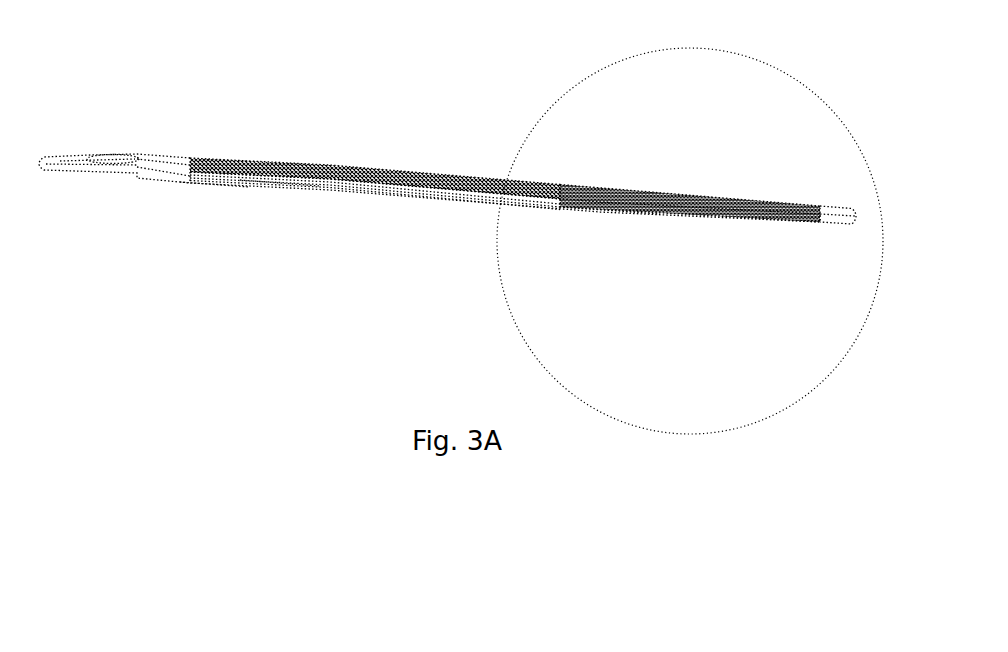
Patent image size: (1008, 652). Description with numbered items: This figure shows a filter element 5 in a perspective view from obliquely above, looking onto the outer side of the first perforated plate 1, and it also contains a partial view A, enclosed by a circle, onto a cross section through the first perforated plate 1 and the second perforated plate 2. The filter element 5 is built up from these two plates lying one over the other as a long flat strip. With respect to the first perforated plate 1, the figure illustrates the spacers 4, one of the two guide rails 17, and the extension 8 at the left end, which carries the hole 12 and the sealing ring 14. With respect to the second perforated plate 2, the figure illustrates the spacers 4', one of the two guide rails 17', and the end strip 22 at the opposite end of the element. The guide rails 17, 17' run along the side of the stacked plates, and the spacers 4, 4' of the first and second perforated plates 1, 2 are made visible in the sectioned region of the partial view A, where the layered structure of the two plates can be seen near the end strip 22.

The first perforated plate 1 is at (447, 182).
The second perforated plate 2 is at (351, 217).
The spacers 4 is at (690, 153).
The spacers 4' is at (600, 233).
The filter element 5 is at (438, 248).
The extension 8 is at (89, 166).
The hole 12 is at (123, 128).
The sealing ring 14 is at (137, 160).
The guide rail 17 is at (277, 252).
The guide rail 17' is at (199, 253).
The end strip 22 is at (833, 220).
The partial view A is at (835, 373).